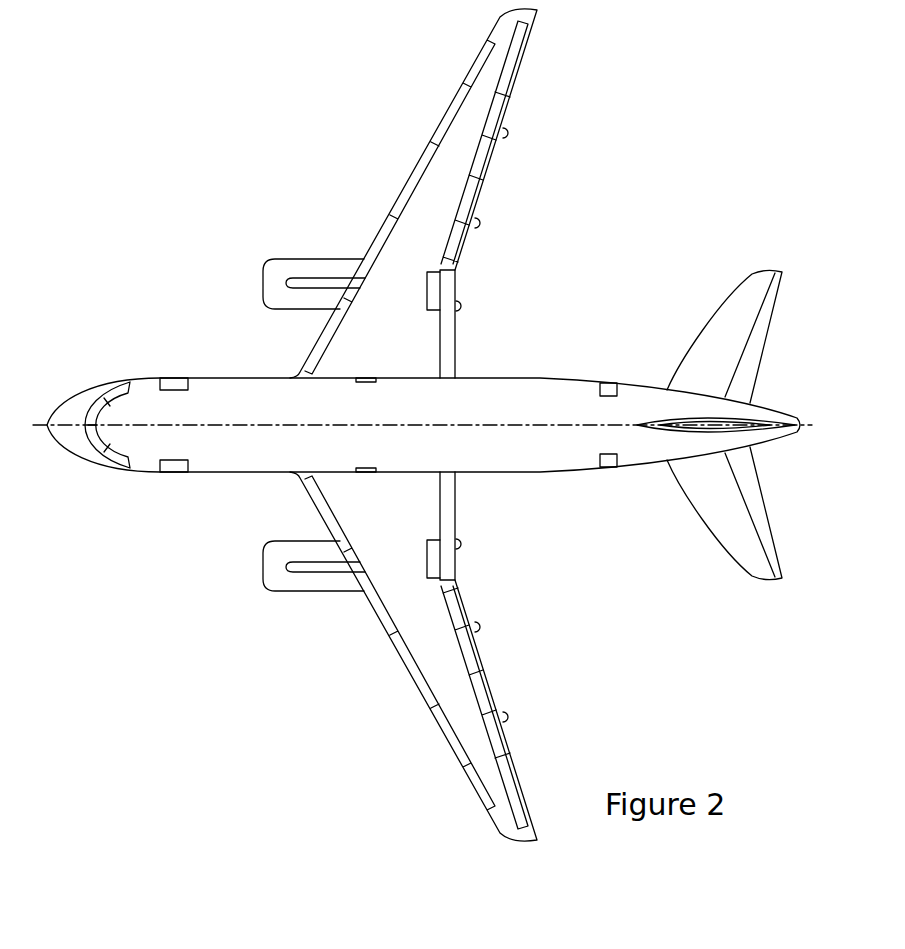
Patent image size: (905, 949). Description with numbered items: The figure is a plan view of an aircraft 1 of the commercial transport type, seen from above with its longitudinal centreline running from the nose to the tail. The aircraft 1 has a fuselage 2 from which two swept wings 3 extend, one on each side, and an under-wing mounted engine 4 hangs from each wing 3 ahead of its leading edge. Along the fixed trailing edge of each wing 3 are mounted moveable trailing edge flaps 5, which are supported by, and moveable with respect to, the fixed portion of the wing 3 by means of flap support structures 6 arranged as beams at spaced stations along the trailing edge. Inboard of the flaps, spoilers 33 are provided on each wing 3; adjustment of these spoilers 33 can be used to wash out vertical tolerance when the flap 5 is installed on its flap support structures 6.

The aircraft 1 is at (150, 145).
The fuselage 2 is at (232, 392).
The wing 3 is at (408, 235).
The engine 4 is at (282, 273).
The trailing edge flap 5 is at (450, 244).
The flap support structure 6 is at (511, 131).
The spoiler 33 is at (462, 202).